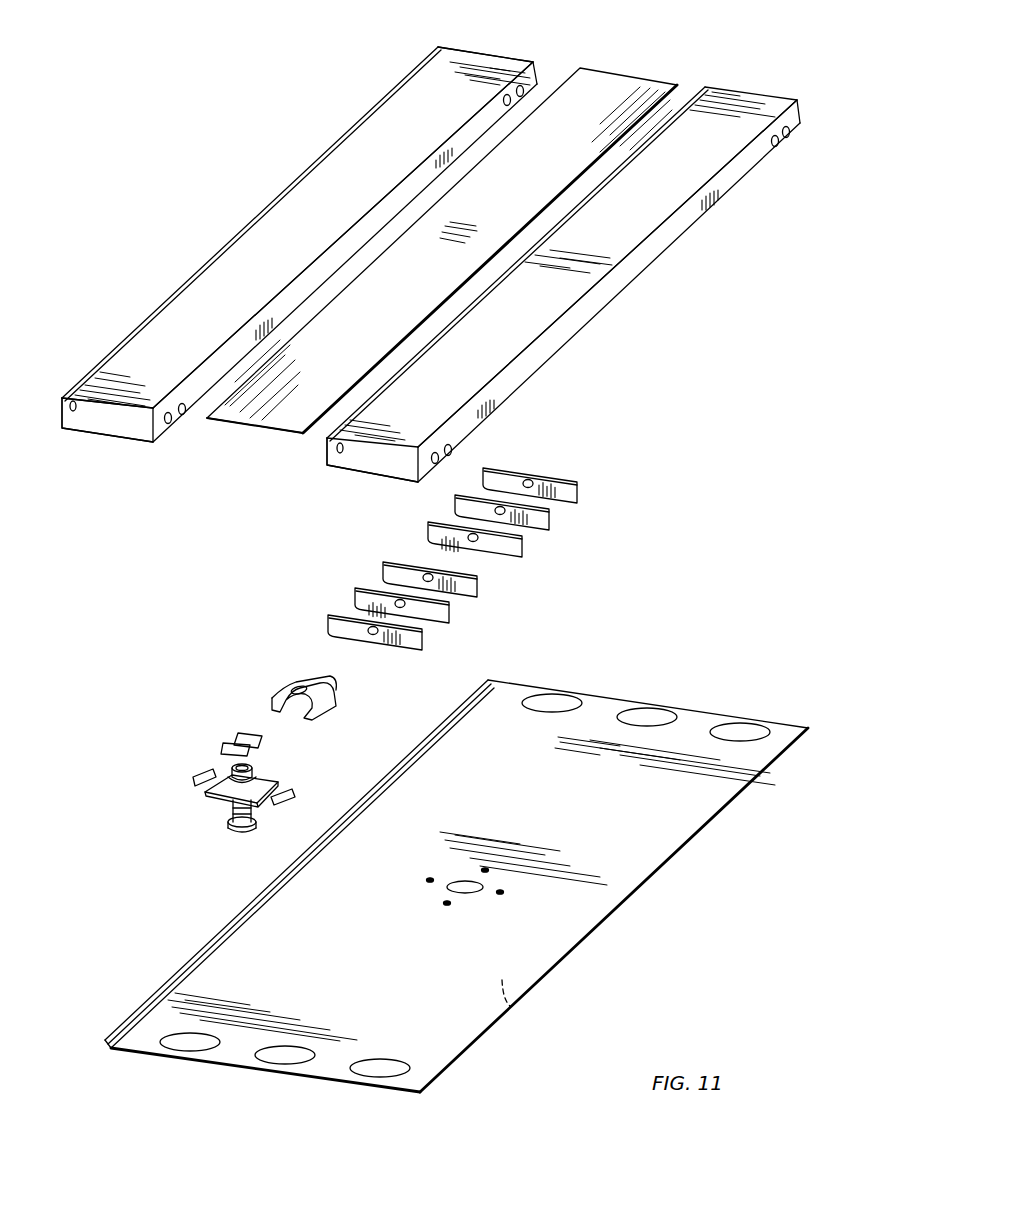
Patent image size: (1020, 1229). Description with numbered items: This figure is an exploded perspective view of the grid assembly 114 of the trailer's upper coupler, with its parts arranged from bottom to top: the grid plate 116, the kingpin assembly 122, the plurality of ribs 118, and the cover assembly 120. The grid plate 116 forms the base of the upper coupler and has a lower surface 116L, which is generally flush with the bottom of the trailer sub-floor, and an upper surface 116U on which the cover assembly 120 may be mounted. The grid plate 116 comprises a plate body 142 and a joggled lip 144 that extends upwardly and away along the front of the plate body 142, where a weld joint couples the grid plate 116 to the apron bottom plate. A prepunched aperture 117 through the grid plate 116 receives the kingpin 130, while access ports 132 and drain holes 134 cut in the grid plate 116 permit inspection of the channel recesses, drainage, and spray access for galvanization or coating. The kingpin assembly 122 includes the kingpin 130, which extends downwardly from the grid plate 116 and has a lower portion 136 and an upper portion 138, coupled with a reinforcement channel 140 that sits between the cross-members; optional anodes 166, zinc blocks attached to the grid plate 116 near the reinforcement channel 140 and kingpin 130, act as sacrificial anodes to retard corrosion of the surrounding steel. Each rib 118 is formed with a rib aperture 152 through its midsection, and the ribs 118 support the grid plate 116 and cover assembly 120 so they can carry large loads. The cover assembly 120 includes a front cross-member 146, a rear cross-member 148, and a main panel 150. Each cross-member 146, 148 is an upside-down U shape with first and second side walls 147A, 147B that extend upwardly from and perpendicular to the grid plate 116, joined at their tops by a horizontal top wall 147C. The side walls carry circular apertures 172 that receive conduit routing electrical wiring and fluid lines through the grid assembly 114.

The grid assembly 114 is at (222, 152).
The grid plate 116 is at (696, 658).
The upper surface 116U is at (578, 930).
The lower surface 116L is at (509, 1006).
The aperture 117 is at (467, 878).
The ribs 118 is at (592, 455).
The cover assembly 120 is at (160, 276).
The kingpin assembly 122 is at (224, 722).
The kingpin 130 is at (216, 815).
The access ports 132 is at (552, 698).
The drain holes 134 is at (500, 890).
The lower portion 136 is at (255, 816).
The upper portion 138 is at (257, 778).
The reinforcement channel 140 is at (322, 682).
The plate body 142 is at (383, 962).
The joggled lip 144 is at (198, 956).
The front cross-member 146 is at (303, 182).
The first side wall 147A is at (73, 412).
The second side wall 147B is at (190, 397).
The top wall 147C is at (316, 249).
The rear cross-member 148 is at (648, 210).
The main panel 150 is at (294, 405).
The rib aperture 152 is at (482, 545).
The anodes 166 is at (258, 745).
The apertures 172 is at (167, 406).